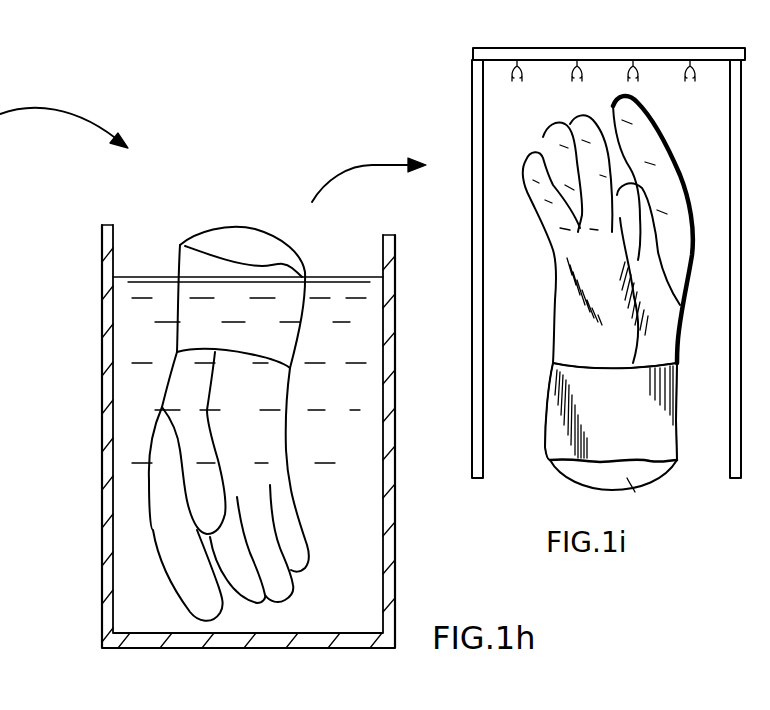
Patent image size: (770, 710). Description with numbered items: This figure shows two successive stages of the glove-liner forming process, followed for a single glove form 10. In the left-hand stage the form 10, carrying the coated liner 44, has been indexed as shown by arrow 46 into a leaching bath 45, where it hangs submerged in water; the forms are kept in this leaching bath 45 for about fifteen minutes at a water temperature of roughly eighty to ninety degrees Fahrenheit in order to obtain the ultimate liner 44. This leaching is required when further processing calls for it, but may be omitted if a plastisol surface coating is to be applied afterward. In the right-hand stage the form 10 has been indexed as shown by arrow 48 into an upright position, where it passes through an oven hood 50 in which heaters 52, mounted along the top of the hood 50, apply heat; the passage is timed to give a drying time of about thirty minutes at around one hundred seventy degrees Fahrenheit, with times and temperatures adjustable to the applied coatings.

In FIG. 1H, the form 10 is at (243, 238).
In FIG. 1I, the form 10 is at (625, 480).
In FIG. 1H, the liner 44 is at (280, 273).
In FIG. 1I, the liner 44 is at (662, 325).
In FIG. 1H, the leaching bath 45 is at (133, 418).
In FIG. 1H, the arrow 46 is at (64, 113).
In FIG. 1H, the arrow 48 is at (358, 166).
In FIG. 1I, the oven hood 50 is at (478, 233).
In FIG. 1I, the heaters 52 is at (690, 62).